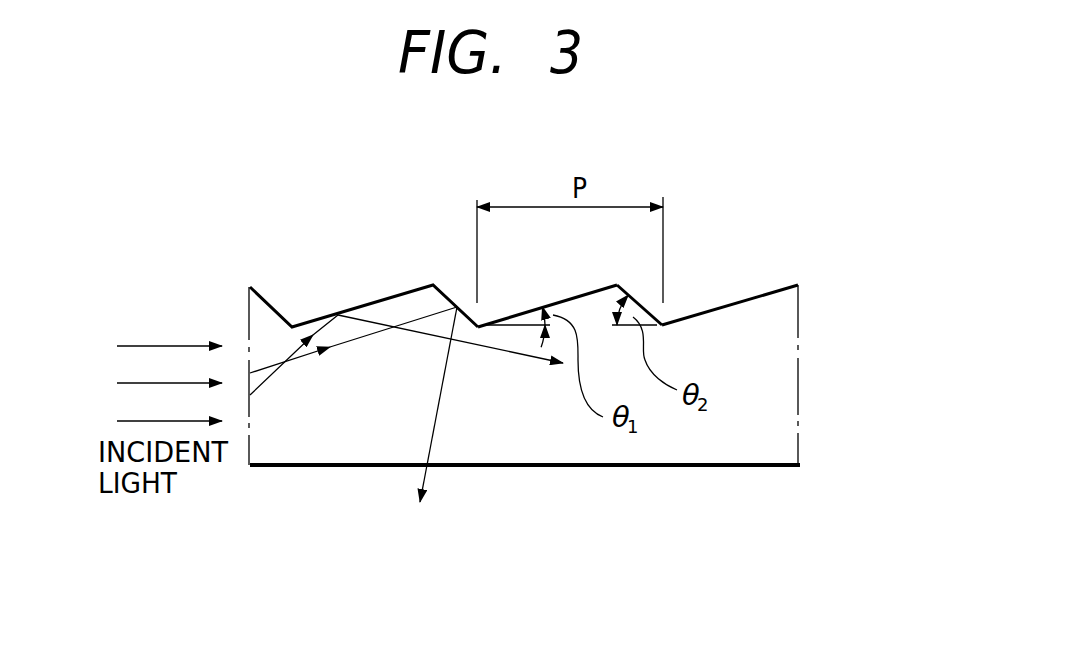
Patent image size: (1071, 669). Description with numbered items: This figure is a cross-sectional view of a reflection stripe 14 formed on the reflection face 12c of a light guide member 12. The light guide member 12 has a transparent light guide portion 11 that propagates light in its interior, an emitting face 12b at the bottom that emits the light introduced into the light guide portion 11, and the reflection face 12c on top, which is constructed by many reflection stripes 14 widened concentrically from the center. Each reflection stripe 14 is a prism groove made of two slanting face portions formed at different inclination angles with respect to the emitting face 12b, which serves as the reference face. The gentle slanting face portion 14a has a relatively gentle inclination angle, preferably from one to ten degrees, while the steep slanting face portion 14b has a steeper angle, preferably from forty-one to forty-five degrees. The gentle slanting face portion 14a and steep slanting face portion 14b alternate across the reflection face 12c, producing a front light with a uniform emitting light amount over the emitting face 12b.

The light guide portion 11 is at (330, 437).
The light guide member 12 is at (540, 357).
The emitting face 12b is at (517, 468).
The reflection face 12c is at (540, 213).
The reflection stripe 14 is at (654, 213).
The gentle slanting face portion 14a is at (775, 291).
The steep slanting face portion 14b is at (678, 241).